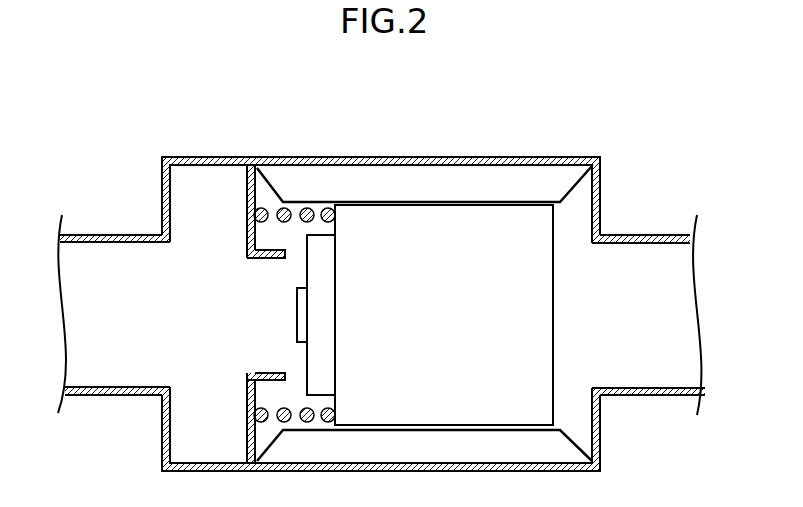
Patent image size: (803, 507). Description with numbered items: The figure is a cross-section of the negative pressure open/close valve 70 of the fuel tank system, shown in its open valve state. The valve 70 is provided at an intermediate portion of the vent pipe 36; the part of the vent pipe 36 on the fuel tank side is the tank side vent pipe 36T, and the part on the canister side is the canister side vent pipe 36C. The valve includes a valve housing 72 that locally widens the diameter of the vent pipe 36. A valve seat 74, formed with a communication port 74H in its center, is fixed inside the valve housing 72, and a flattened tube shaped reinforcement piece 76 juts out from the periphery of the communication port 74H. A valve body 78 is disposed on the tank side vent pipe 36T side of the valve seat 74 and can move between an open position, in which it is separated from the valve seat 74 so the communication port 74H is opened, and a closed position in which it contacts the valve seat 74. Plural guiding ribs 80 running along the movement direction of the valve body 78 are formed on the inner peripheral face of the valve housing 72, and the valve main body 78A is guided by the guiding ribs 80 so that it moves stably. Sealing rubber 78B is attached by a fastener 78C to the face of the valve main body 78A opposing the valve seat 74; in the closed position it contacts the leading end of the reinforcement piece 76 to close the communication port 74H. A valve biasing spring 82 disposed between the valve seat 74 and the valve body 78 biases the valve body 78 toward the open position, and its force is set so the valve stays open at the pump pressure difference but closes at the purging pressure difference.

The vent pipe 36 is at (110, 217).
The canister side vent pipe 36C is at (105, 396).
The tank side vent pipe 36T is at (652, 397).
The negative pressure open/close valve 70 is at (545, 121).
The valve housing 72 is at (200, 157).
The valve seat 74 is at (248, 448).
The communication port 74H is at (253, 372).
The reinforcement piece 76 is at (256, 258).
The valve body 78 is at (434, 258).
The valve main body 78A is at (433, 235).
The sealing rubber 78B is at (318, 365).
The fastener 78C is at (297, 315).
The guiding ribs 80 is at (570, 182).
The valve biasing spring 82 is at (262, 208).